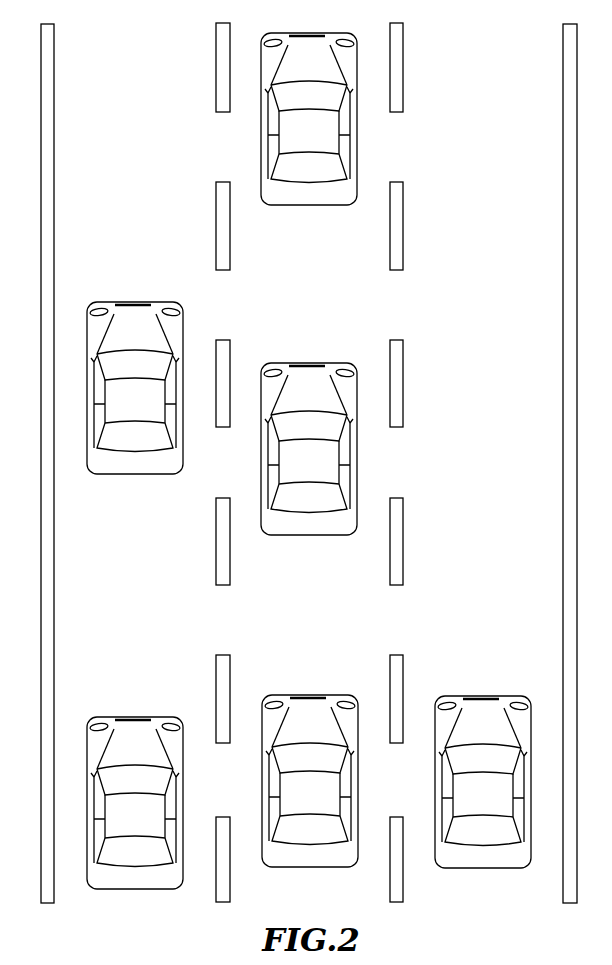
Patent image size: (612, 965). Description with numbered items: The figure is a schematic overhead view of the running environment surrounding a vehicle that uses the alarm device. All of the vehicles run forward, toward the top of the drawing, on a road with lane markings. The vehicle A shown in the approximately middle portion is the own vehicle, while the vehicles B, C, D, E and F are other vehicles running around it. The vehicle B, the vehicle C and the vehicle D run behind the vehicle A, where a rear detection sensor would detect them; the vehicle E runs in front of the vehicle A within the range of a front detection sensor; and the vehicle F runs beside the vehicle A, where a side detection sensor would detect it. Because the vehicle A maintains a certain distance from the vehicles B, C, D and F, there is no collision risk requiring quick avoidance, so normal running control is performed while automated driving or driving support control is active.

The vehicle E is at (357, 130).
The vehicle F is at (150, 474).
The vehicle A is at (358, 445).
The vehicle C is at (134, 717).
The vehicle B is at (308, 695).
The vehicle D is at (485, 696).